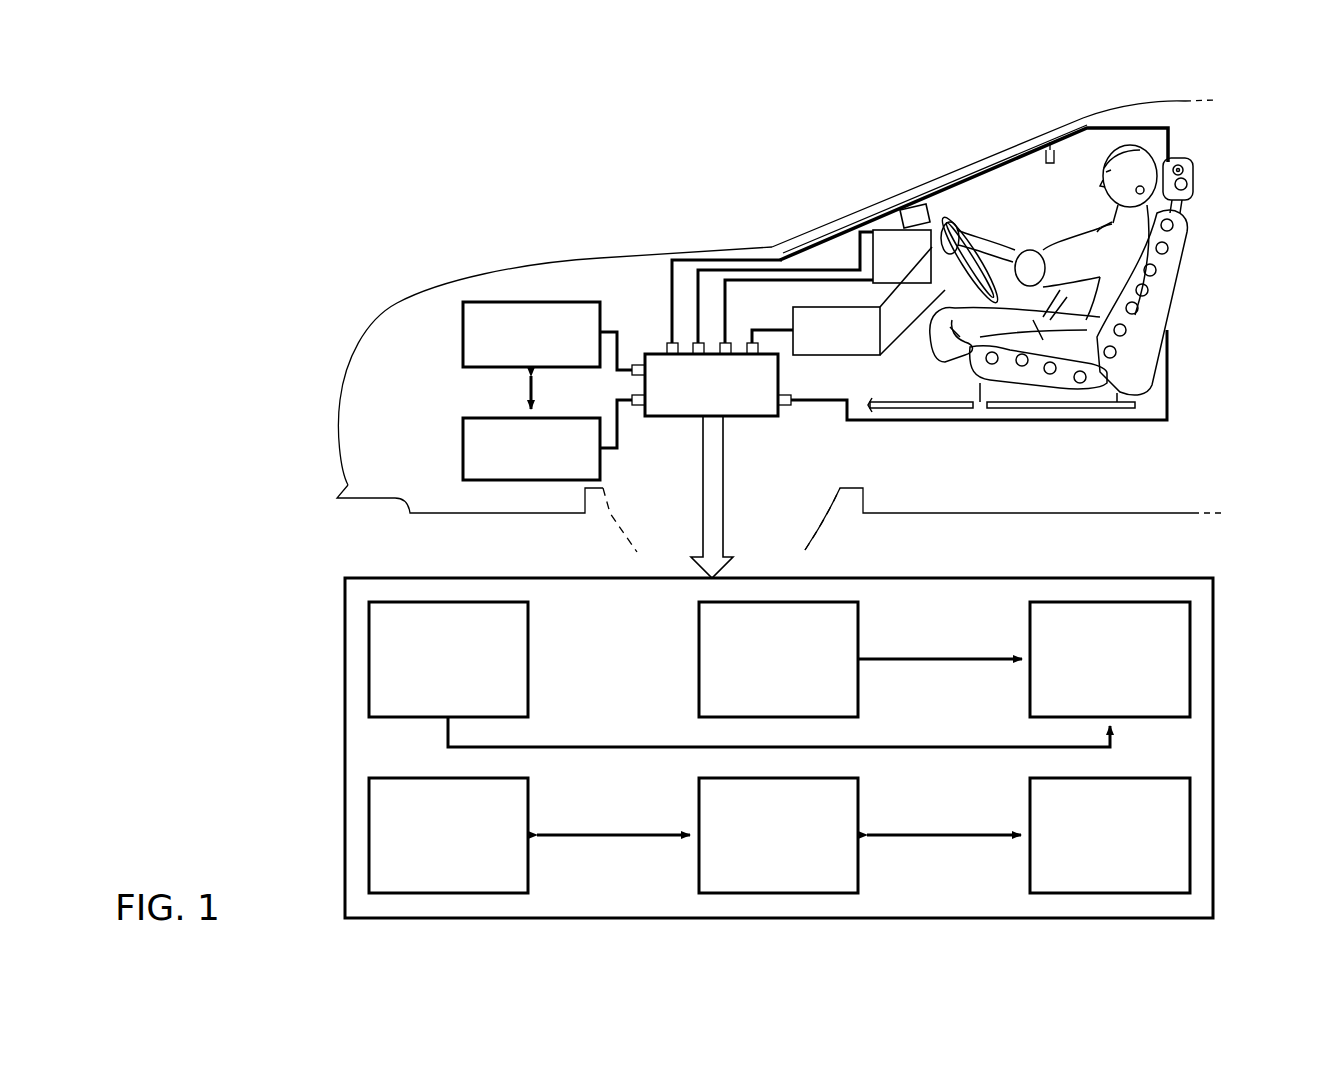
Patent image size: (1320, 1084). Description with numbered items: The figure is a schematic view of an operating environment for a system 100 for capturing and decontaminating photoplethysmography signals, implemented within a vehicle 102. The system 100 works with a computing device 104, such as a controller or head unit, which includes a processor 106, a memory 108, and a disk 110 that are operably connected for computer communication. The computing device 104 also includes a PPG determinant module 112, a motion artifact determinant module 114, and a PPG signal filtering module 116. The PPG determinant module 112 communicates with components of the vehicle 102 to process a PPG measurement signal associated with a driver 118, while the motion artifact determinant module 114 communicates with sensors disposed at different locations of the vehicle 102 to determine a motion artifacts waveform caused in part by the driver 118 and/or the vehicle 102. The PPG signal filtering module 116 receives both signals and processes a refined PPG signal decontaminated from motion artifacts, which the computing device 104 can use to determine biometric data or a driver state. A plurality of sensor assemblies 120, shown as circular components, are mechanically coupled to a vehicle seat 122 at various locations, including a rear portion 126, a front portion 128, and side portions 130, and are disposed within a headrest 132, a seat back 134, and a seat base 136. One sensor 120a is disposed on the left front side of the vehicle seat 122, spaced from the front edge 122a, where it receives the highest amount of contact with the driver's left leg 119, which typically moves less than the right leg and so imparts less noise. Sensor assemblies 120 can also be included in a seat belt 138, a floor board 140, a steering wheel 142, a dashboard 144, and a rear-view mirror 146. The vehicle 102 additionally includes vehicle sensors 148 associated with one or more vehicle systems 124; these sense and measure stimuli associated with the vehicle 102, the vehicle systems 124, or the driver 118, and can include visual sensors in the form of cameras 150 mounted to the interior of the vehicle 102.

The system 100 is at (928, 105).
The vehicle 102 is at (568, 263).
The computing device 104 is at (750, 418).
The processor 106 is at (859, 808).
The memory 108 is at (1190, 834).
The disk 110 is at (369, 834).
The PPG determinant module 112 is at (369, 656).
The motion artifact determinant module 114 is at (859, 630).
The PPG signal filtering module 116 is at (1190, 658).
The driver 118 is at (1130, 148).
The left leg 119 is at (1018, 341).
The sensor assembly 120 is at (1188, 160).
The sensor 120a is at (1011, 383).
The vehicle seat 122 is at (1172, 254).
The front edge 122a is at (975, 368).
The vehicle systems 124 is at (463, 340).
The rear portion 126 is at (1150, 340).
The front portion 128 is at (1178, 228).
The side portions 130 is at (1054, 410).
The headrest 132 is at (1197, 183).
The seat back 134 is at (1175, 284).
The seat base 136 is at (1118, 396).
The seat belt 138 is at (1108, 225).
The floor board 140 is at (932, 410).
The steering wheel 142 is at (936, 203).
The dashboard 144 is at (888, 252).
The rear-view mirror 146 is at (1044, 156).
The vehicle sensors 148 is at (463, 455).
The cameras 150 is at (895, 238).